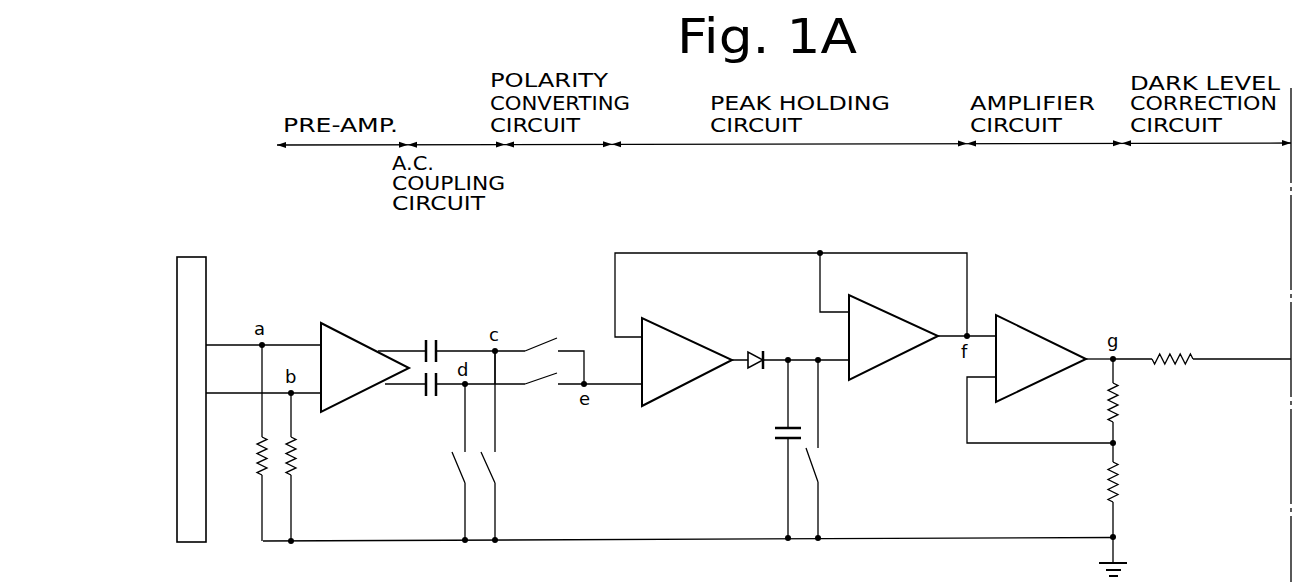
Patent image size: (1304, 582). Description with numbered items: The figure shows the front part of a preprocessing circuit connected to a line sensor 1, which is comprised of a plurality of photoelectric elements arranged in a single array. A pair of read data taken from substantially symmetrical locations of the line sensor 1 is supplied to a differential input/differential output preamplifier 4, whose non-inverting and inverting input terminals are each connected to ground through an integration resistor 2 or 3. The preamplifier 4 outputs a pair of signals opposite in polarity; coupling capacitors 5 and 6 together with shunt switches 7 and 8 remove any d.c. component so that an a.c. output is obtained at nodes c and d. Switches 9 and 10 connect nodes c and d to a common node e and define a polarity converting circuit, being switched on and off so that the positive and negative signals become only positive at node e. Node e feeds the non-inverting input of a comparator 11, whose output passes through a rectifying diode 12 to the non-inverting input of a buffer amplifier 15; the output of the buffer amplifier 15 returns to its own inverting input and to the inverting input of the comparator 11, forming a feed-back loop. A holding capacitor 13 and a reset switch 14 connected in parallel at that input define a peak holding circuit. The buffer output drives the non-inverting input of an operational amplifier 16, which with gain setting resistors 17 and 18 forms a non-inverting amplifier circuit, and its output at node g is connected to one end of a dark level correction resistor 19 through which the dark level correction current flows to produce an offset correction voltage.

The line sensor 1 is at (207, 276).
The integration resistor 2 is at (260, 450).
The integration resistor 3 is at (294, 450).
The preamplifier 4 is at (368, 343).
The coupling capacitor 5 is at (432, 338).
The coupling capacitor 6 is at (428, 397).
The shunt switch 7 is at (452, 470).
The shunt switch 8 is at (499, 466).
The polarity converting switch 9 is at (548, 339).
The polarity converting switch 10 is at (548, 392).
The comparator 11 is at (696, 341).
The rectifying diode 12 is at (761, 350).
The holding capacitor 13 is at (773, 432).
The reset switch 14 is at (818, 462).
The buffer amplifier 15 is at (899, 318).
The operational amplifier 16 is at (1060, 338).
The gain setting resistor 17 is at (1118, 398).
The gain setting resistor 18 is at (1118, 478).
The dark level correction resistor 19 is at (1178, 350).